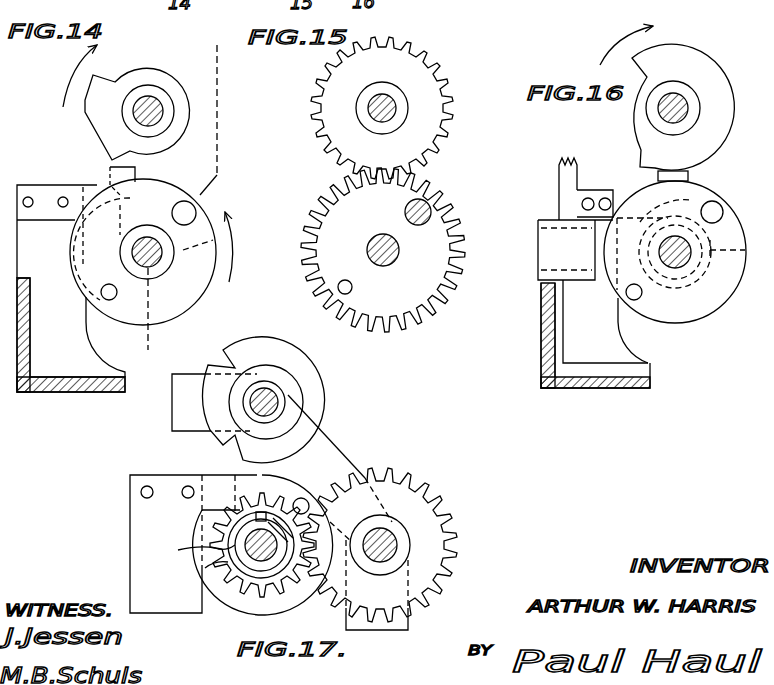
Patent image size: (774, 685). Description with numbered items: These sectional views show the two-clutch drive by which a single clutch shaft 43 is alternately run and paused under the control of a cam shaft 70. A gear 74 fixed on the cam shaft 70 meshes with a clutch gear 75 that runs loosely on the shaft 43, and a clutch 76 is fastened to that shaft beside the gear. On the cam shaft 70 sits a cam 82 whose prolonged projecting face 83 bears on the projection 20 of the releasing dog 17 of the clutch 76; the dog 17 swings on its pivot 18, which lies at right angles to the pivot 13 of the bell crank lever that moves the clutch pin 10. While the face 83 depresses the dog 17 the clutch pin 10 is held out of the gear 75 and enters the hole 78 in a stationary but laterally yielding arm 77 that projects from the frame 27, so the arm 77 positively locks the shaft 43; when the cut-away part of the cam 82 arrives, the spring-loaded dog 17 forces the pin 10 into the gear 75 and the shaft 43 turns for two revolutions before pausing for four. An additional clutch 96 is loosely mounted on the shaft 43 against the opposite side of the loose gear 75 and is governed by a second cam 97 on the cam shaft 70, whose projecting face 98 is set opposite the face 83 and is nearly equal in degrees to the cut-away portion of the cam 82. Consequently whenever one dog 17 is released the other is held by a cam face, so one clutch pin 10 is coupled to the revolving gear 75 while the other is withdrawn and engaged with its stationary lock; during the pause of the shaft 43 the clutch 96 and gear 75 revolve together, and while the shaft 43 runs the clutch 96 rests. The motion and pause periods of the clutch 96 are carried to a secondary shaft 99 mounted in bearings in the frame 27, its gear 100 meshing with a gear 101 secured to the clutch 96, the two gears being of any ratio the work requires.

In FIG. 14, the clutch pin 10 is at (172, 228).
In FIG. 15, the clutch pin 10 is at (432, 196).
In FIG. 16, the clutch pin 10 is at (712, 218).
In FIG. 14, the pivot of the bell crank lever 13 is at (181, 204).
In FIG. 14, the releasing dog 17 is at (72, 240).
In FIG. 14, the pivot of the dog 18 is at (100, 294).
In FIG. 15, the pivot of the dog 18 is at (352, 288).
In FIG. 16, the pivot of the dog 18 is at (636, 300).
In FIG. 14, the projection of the dog 20 is at (110, 169).
In FIG. 16, the projection of the dog 20 is at (690, 178).
In FIG. 14, the frame 27 is at (71, 335).
In FIG. 16, the frame 27 is at (541, 331).
In FIG. 14, the clutch shaft 43 is at (152, 256).
In FIG. 15, the clutch shaft 43 is at (399, 249).
In FIG. 16, the clutch shaft 43 is at (677, 262).
In FIG. 17, the clutch shaft 43 is at (246, 548).
In FIG. 14, the cam shaft 70 is at (153, 121).
In FIG. 15, the cam shaft 70 is at (397, 107).
In FIG. 16, the cam shaft 70 is at (687, 102).
In FIG. 17, the cam shaft 70 is at (249, 402).
In FIG. 15, the gear on the cam shaft 74 is at (415, 51).
In FIG. 15, the clutch gear 75 is at (441, 232).
In FIG. 16, the clutch 76 is at (703, 309).
In FIG. 16, the stationary laterally yielding arm 77 is at (612, 196).
In FIG. 17, the stationary laterally yielding arm 77 is at (214, 481).
In FIG. 17, the hole in the arm 78 is at (303, 498).
In FIG. 16, the cam 82 is at (653, 112).
In FIG. 17, the cam 82 is at (308, 392).
In FIG. 16, the projecting face of the cam 83 is at (711, 53).
In FIG. 17, the projecting face of the cam 83 is at (309, 363).
In FIG. 14, the additional clutch 96 is at (180, 306).
In FIG. 14, the second cam 97 is at (156, 85).
In FIG. 17, the second cam 97 is at (282, 419).
In FIG. 14, the projecting face of the second cam 98 is at (85, 122).
In FIG. 17, the projecting face of the second cam 98 is at (172, 416).
In FIG. 17, the secondary shaft 99 is at (396, 532).
In FIG. 17, the gear on the secondary shaft 100 is at (426, 532).
In FIG. 17, the gear secured to the clutch 101 is at (185, 554).